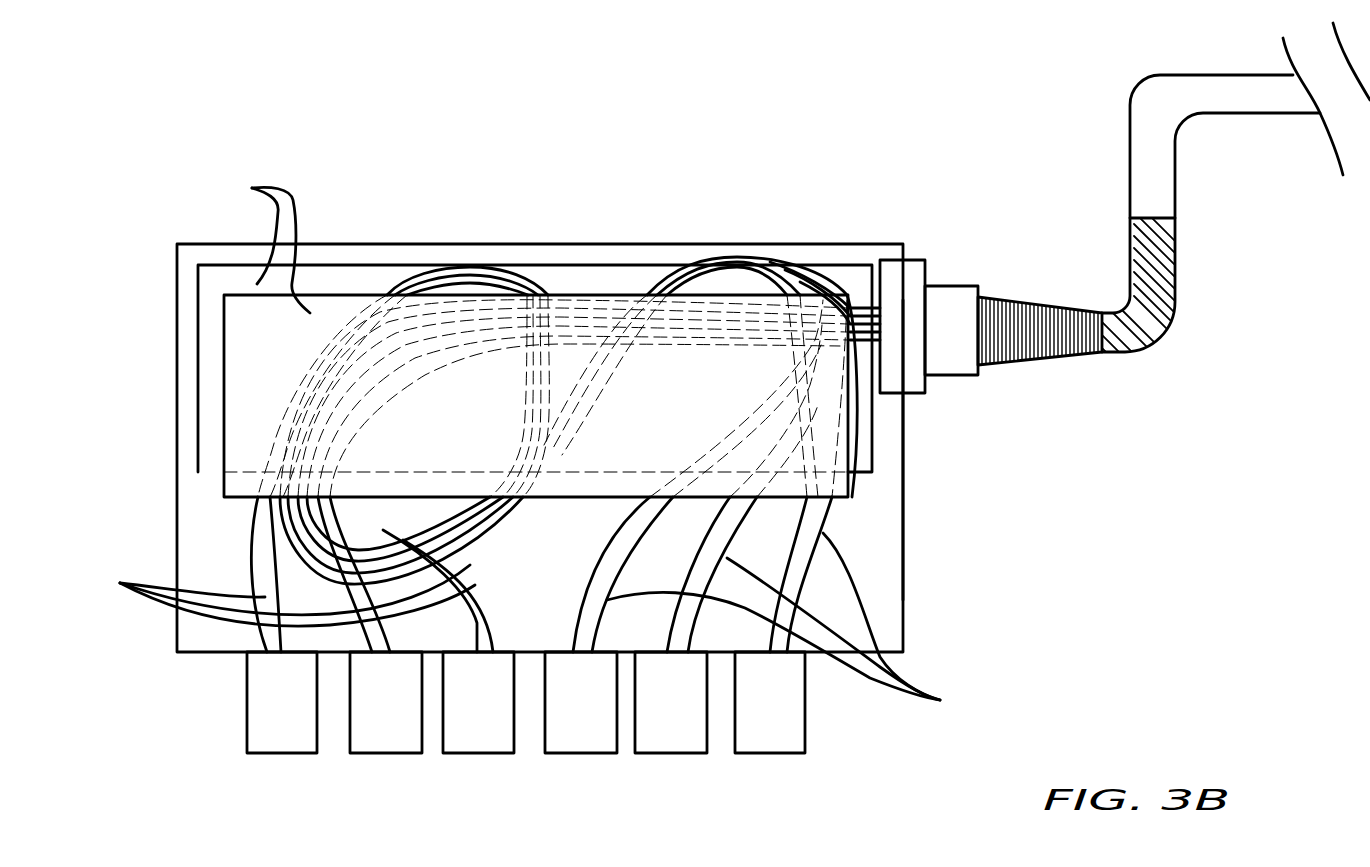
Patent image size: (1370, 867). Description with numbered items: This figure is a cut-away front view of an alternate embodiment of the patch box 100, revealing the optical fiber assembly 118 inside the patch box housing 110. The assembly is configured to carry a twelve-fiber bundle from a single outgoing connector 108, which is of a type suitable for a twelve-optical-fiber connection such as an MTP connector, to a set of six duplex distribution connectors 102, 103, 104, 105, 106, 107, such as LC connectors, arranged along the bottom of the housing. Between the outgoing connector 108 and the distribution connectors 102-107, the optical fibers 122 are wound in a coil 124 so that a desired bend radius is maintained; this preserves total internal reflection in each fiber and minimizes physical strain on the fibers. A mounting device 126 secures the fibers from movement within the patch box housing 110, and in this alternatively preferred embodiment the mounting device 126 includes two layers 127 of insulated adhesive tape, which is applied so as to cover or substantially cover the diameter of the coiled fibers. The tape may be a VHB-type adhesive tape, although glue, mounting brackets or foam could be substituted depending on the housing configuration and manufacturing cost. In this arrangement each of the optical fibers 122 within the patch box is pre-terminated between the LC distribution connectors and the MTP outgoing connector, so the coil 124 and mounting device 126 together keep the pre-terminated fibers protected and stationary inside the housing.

The patch box 100 is at (903, 620).
The duplex distribution connector 102 is at (305, 753).
The duplex distribution connector 103 is at (408, 753).
The duplex distribution connector 104 is at (500, 753).
The duplex distribution connector 105 is at (602, 753).
The duplex distribution connector 106 is at (692, 753).
The duplex distribution connector 107 is at (792, 753).
The outgoing connector 108 is at (937, 286).
The patch box housing 110 is at (873, 563).
The optical fiber assembly 118 is at (458, 243).
The optical fibers 122 is at (940, 700).
The coil 124 is at (263, 450).
The mounting device 126 is at (262, 346).
The layers of insulated adhesive tape 127 is at (253, 243).